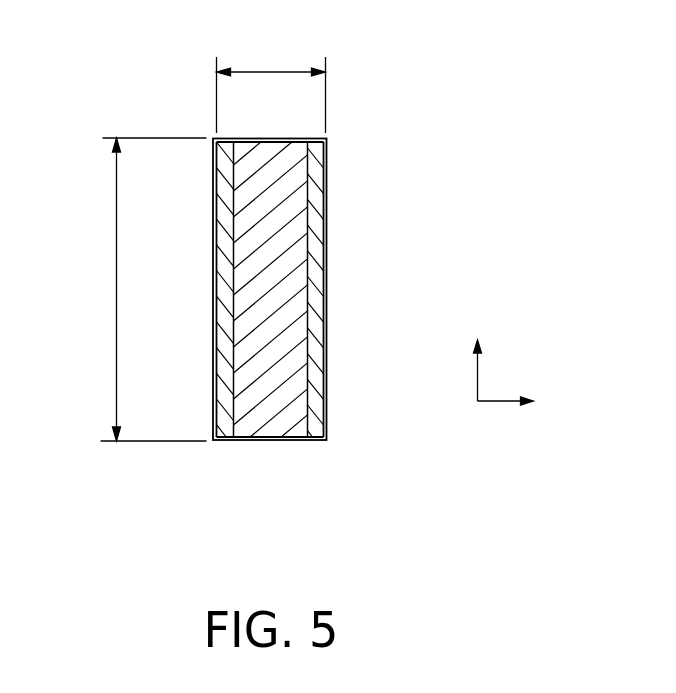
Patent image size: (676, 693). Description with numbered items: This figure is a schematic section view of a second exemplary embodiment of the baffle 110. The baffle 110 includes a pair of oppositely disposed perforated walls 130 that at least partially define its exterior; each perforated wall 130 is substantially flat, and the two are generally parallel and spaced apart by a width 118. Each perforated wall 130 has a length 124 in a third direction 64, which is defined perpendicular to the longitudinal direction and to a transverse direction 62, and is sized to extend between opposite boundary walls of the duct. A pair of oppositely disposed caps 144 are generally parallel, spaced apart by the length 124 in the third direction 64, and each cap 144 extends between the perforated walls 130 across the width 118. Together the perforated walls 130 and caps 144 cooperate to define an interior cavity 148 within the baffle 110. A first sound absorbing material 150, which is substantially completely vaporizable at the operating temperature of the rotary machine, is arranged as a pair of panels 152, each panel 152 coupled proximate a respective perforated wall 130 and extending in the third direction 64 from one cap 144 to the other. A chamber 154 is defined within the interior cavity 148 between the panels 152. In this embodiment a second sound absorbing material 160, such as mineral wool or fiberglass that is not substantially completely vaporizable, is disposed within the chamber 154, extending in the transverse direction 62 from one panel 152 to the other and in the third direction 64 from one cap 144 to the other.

The baffle 110 is at (358, 139).
The width 118 is at (270, 72).
The length 124 is at (116, 283).
The perforated wall 130 is at (216, 228).
The cap 144 is at (249, 138).
The interior cavity 148 is at (250, 410).
The first sound absorbing material 150 is at (216, 330).
The panel 152 is at (210, 192).
The chamber 154 is at (273, 430).
The second sound absorbing material 160 is at (293, 298).
The transverse direction 62 is at (490, 401).
The third direction 64 is at (478, 372).